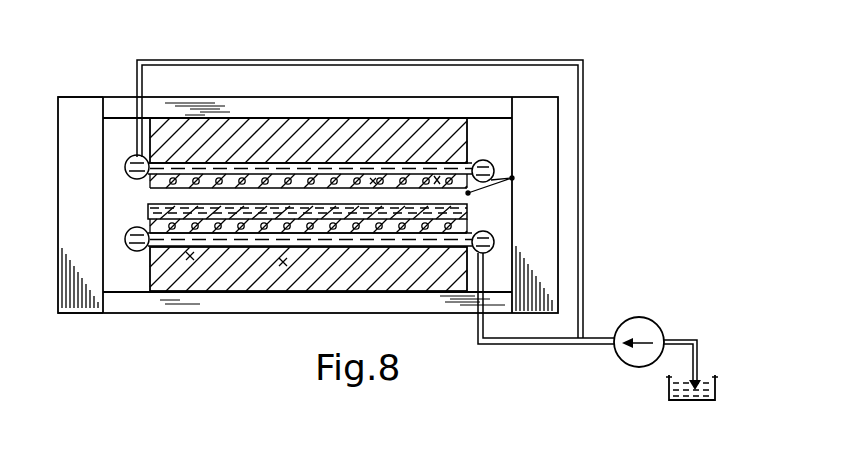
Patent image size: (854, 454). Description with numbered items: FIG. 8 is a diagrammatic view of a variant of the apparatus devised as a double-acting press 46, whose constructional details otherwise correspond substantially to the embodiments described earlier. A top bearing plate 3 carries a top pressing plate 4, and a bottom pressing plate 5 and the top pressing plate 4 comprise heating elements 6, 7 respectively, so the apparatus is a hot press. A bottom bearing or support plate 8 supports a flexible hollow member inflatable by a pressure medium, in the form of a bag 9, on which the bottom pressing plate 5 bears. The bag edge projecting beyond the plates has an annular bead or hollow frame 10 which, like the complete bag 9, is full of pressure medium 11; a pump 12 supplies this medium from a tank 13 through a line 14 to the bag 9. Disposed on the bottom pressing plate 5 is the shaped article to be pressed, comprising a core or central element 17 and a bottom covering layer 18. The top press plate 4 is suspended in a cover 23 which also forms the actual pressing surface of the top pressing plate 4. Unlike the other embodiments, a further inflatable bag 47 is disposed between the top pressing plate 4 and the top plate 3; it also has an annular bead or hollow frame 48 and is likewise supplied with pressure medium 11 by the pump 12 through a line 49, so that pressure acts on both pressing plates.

The top bearing plate 3 is at (291, 122).
The top pressing plate 4 is at (411, 168).
The bottom pressing plate 5 is at (449, 246).
The heating elements 6 is at (373, 182).
The heating elements 7 is at (283, 262).
The bottom bearing plate 8 is at (200, 275).
The bag 9 is at (190, 256).
The hollow frame 10 is at (125, 240).
The pressure medium 11 is at (485, 161).
The pump 12 is at (635, 318).
The tank 13 is at (670, 390).
The line 14 is at (504, 343).
The core 17 is at (148, 187).
The bottom covering layer 18 is at (148, 210).
The cover 23 is at (124, 163).
The double-acting press 46 is at (563, 147).
The further inflatable bag 47 is at (437, 180).
The hollow frame 48 is at (500, 165).
The line 49 is at (189, 60).